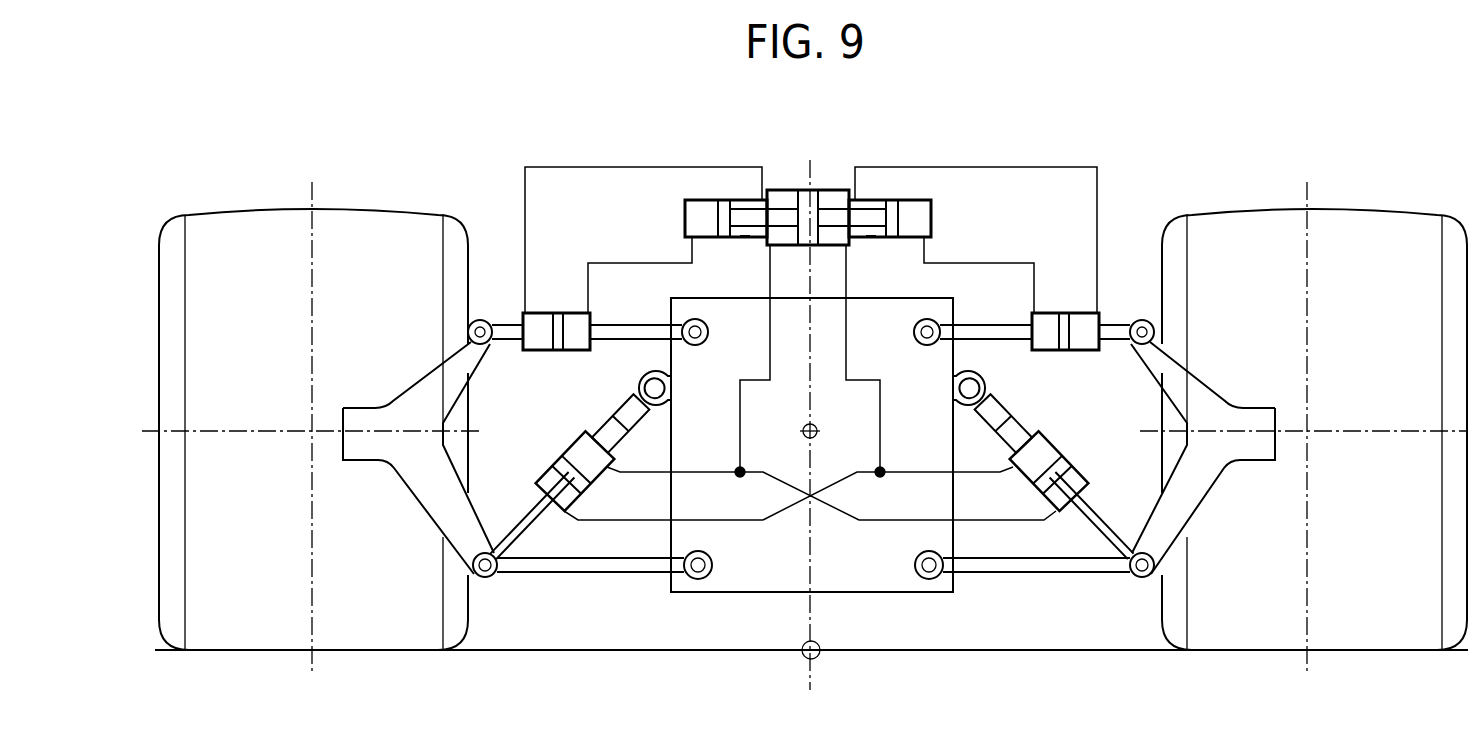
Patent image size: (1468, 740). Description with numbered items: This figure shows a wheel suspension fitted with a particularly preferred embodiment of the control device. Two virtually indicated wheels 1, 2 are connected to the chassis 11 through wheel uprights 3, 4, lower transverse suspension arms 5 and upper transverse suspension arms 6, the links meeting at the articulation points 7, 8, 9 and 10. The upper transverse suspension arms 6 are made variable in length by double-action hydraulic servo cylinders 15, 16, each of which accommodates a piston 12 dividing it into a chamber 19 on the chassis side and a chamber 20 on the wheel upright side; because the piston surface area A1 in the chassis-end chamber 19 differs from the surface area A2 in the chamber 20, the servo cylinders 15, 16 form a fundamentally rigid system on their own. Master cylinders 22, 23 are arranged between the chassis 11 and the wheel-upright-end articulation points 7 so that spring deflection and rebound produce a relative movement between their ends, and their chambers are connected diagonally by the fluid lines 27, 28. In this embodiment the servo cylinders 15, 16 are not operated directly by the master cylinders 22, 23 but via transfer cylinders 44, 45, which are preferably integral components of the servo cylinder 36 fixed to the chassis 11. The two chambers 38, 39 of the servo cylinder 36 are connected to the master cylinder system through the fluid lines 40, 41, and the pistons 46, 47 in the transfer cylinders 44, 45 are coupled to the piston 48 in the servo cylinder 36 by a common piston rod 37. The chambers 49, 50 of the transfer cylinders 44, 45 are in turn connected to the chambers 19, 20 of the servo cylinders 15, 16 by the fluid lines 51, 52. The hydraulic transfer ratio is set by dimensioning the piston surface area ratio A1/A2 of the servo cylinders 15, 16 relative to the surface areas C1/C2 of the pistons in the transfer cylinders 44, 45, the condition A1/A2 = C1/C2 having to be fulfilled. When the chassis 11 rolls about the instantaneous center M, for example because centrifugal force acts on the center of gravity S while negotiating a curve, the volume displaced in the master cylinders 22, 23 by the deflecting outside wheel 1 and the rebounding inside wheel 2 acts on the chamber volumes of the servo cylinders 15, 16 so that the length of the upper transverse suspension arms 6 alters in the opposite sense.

The wheel 1 is at (220, 238).
The wheel 2 is at (1398, 238).
The wheel upright 3 is at (357, 461).
The wheel upright 4 is at (1260, 461).
The lower transverse suspension arm 5 is at (571, 573).
The upper transverse suspension arm 6 is at (625, 345).
The articulation point 7 is at (490, 578).
The articulation point 8 is at (697, 580).
The articulation point 9 is at (468, 330).
The articulation point 10 is at (709, 332).
The chassis 11 is at (774, 581).
The piston 12 is at (556, 351).
The servo cylinder 15 is at (556, 305).
The servo cylinder 16 is at (1064, 305).
The chamber on the chassis side 19 is at (580, 351).
The chamber on the wheel upright side 20 is at (529, 351).
The master cylinder 22 is at (548, 465).
The master cylinder 23 is at (1079, 465).
The fluid line 27 is at (907, 470).
The fluid line 28 is at (712, 470).
The servo cylinder 36 is at (840, 186).
The common piston rod 37 is at (778, 216).
The chamber 38 is at (778, 246).
The chamber 39 is at (834, 246).
The fluid line 40 is at (740, 394).
The fluid line 41 is at (880, 394).
The transfer cylinder 44 is at (684, 195).
The transfer cylinder 45 is at (926, 195).
The piston 46 is at (728, 215).
The piston 47 is at (890, 214).
The piston 48 is at (812, 200).
The chamber 49 is at (690, 222).
The chamber 50 is at (745, 238).
The fluid line 51 is at (616, 263).
The fluid line 52 is at (612, 167).
The piston surface area A1 is at (570, 332).
The piston surface area A2 is at (550, 332).
The piston surface area C1 is at (718, 212).
The piston surface area C2 is at (742, 214).
The center of gravity S is at (818, 431).
The instantaneous center M is at (818, 660).